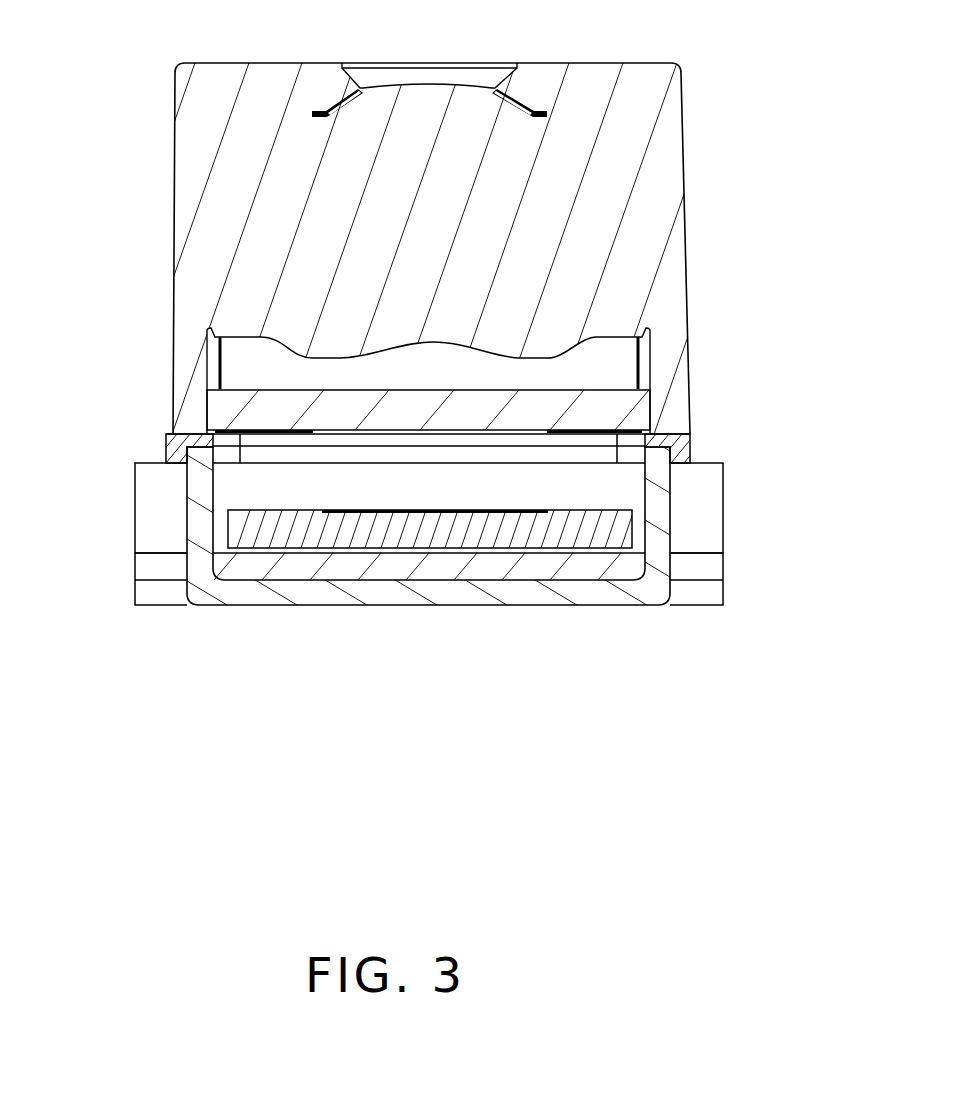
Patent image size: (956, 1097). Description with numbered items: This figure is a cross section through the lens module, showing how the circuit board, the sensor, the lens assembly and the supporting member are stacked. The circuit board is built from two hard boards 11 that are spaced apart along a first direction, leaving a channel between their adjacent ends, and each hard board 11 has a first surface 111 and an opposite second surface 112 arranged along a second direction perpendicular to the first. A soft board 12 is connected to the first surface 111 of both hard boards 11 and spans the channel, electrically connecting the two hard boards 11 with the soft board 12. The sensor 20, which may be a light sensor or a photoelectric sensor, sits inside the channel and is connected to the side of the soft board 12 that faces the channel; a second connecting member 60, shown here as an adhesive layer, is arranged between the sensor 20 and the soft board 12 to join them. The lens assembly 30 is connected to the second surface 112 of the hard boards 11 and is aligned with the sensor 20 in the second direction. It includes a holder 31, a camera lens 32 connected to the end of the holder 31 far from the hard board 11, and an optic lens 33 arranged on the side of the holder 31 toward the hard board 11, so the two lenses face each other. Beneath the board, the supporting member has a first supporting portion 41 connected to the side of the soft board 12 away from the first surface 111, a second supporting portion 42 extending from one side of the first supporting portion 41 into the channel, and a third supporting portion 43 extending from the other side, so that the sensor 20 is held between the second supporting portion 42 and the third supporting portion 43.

The hard board 11 is at (492, 528).
The first surface 111 is at (698, 553).
The second surface 112 is at (707, 463).
The soft board 12 is at (407, 567).
The sensor 20 is at (253, 527).
The lens assembly 30 is at (424, 250).
The holder 31 is at (255, 285).
The camera lens 32 is at (390, 78).
The optic lens 33 is at (232, 404).
The first supporting portion 41 is at (527, 594).
The second supporting portion 42 is at (657, 513).
The third supporting portion 43 is at (200, 487).
The second connecting member 60 is at (683, 447).